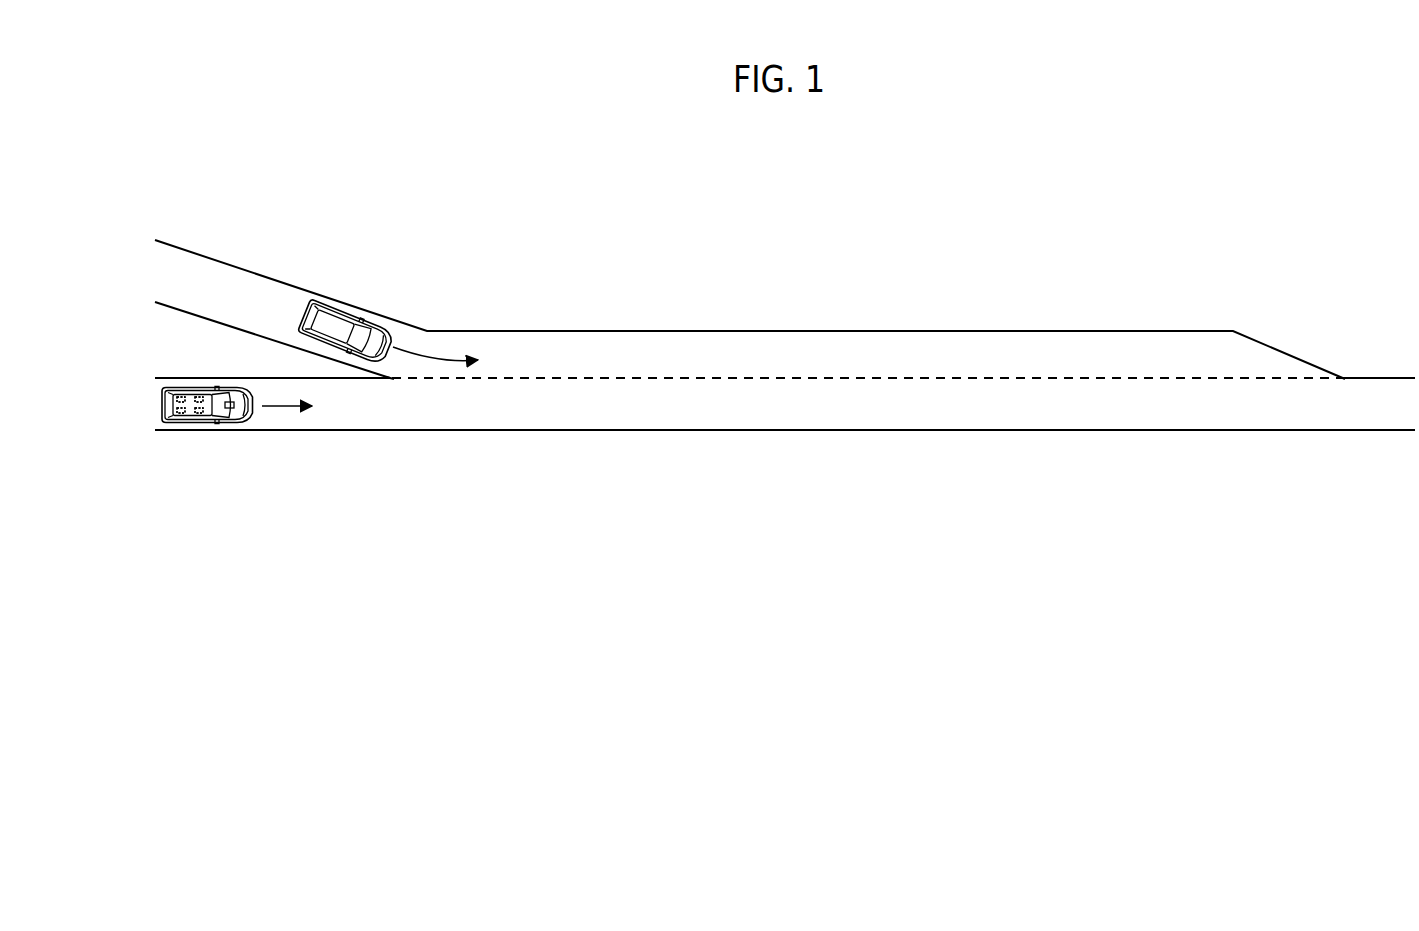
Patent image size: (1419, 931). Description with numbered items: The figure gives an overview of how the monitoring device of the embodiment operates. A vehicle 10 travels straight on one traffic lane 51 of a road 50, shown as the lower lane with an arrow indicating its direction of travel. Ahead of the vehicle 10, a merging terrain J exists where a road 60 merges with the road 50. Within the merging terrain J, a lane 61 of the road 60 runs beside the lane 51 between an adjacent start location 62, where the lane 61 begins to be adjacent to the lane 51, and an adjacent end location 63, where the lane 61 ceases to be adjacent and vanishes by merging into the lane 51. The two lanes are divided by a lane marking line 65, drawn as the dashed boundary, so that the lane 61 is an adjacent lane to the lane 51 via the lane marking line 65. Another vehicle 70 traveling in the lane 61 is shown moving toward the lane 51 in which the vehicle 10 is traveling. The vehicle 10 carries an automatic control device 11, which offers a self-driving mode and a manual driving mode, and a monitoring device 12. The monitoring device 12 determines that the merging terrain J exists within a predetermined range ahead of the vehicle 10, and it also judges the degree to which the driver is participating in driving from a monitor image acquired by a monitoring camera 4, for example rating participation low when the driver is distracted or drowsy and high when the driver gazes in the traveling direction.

The vehicle 10 is at (193, 392).
The monitoring camera 4 is at (229, 392).
The automatic control device 11 is at (203, 428).
The monitoring device 12 is at (178, 428).
The road 50 is at (397, 433).
The traffic lane 51 is at (520, 424).
The road 60 is at (588, 330).
The traffic lane 61 is at (519, 373).
The adjacent start location 62 is at (392, 378).
The adjacent end location 63 is at (1346, 378).
The lane marking line 65 is at (600, 380).
The other vehicle 70 is at (322, 326).
The merging terrain J is at (505, 292).